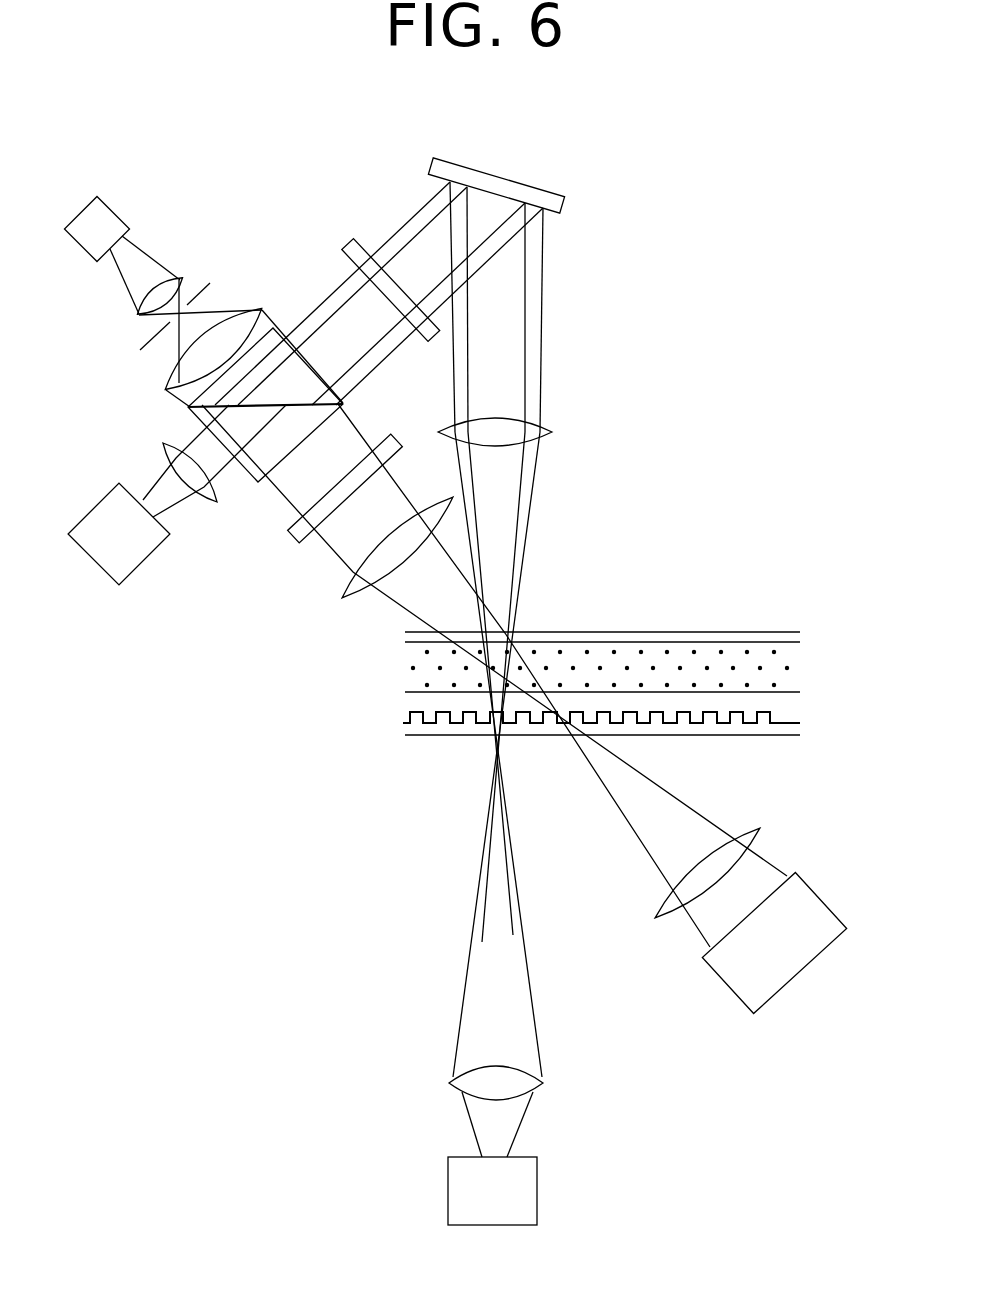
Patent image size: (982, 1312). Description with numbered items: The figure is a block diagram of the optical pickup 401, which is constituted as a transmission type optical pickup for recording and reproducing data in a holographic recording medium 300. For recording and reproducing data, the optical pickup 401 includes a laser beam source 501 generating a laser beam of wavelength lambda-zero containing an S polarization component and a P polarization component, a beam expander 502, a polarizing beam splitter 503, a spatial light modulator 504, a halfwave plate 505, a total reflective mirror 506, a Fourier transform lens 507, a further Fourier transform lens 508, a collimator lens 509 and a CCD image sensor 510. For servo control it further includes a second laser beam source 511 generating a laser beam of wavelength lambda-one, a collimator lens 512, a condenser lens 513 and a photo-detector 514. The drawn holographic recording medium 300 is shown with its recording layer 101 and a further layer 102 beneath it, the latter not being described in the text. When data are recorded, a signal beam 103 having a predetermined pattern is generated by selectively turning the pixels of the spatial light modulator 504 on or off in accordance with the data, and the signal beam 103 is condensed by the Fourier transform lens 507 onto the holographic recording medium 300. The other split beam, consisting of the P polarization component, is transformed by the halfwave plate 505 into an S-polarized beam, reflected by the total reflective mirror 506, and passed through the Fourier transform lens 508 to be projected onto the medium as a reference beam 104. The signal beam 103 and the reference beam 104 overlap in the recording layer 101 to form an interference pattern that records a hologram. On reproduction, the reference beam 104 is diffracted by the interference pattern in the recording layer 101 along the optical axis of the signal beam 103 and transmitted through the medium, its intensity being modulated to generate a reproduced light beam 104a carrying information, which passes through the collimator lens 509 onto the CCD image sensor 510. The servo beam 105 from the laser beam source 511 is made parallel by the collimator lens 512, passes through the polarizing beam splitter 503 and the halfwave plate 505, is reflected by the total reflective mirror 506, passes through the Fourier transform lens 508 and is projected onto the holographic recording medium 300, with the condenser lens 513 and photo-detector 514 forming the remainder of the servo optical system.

The optical pickup 401 is at (331, 135).
The laser beam source 501 is at (120, 218).
The beam expander 502 is at (210, 247).
The polarizing beam splitter 503 is at (163, 393).
The spatial light modulator 504 is at (293, 543).
The halfwave plate 505 is at (350, 240).
The total reflective mirror 506 is at (563, 195).
The Fourier transform lens 507 is at (345, 600).
The Fourier transform lens 508 is at (552, 432).
The collimator lens 509 is at (657, 918).
The CCD image sensor 510 is at (727, 977).
The laser beam source 511 is at (113, 494).
The collimator lens 512 is at (163, 445).
The condenser lens 513 is at (543, 1083).
The photo-detector 514 is at (525, 1203).
The recording layer 101 is at (420, 656).
The grating layer 102 is at (423, 707).
The signal beam 103 is at (330, 550).
The reference beam 104 is at (395, 352).
The reproduced light beam 104a is at (630, 838).
The servo beam 105 is at (183, 505).
The holographic recording medium 300 is at (803, 625).